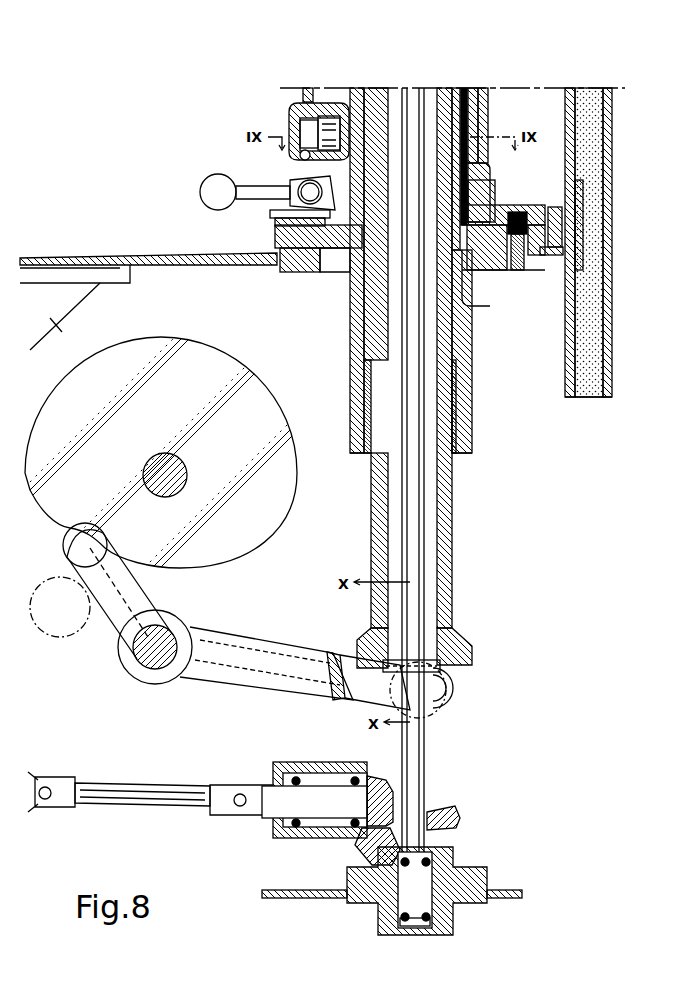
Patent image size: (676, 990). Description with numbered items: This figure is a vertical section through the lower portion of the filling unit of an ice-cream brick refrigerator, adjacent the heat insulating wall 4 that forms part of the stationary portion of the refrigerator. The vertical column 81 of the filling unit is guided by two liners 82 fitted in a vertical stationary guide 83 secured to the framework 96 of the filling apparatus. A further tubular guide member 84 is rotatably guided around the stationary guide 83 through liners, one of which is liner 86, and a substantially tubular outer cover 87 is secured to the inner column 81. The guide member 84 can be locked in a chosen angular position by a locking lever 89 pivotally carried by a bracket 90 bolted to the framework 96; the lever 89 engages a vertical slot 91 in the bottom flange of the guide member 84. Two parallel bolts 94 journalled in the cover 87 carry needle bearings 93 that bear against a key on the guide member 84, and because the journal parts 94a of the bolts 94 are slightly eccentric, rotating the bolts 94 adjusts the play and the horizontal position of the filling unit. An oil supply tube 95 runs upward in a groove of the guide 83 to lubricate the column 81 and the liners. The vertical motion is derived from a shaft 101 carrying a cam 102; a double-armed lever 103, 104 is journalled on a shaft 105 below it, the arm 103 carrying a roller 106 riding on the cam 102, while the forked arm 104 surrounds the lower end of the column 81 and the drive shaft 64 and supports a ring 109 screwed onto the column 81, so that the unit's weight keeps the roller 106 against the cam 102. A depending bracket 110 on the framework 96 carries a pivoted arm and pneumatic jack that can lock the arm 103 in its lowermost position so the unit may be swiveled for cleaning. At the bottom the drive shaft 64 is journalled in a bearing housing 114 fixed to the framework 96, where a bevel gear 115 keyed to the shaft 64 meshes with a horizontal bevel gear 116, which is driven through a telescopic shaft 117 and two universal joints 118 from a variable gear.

The heat insulating wall 4 is at (580, 325).
The drive shaft 64 is at (415, 752).
The vertical column 81 is at (450, 497).
The liner 82 is at (455, 398).
The vertical stationary guide 83 is at (466, 338).
The tubular guide member 84 is at (480, 167).
The liner 86 is at (478, 196).
The outer cover 87 is at (488, 112).
The locking lever 89 is at (263, 190).
The bracket 90 is at (275, 222).
The vertical slot 91 is at (268, 213).
The needle bearing 93 is at (328, 133).
The bolt 94 is at (290, 118).
The journal part 94a is at (320, 120).
The oil supply tube 95 is at (488, 300).
The framework 96 is at (255, 262).
The shaft 101 is at (175, 462).
The cam 102 is at (248, 537).
The lever arm 103 is at (132, 590).
The lever arm 104 is at (262, 645).
The shaft 105 is at (135, 650).
The roller 106 is at (120, 555).
The ring 109 is at (455, 648).
The depending bracket 110 is at (65, 316).
The bearing housing 114 is at (372, 846).
The bevel gear 115 is at (448, 814).
The bevel gear 116 is at (372, 790).
The telescopic shaft 117 is at (148, 795).
The universal joint 118 is at (48, 787).